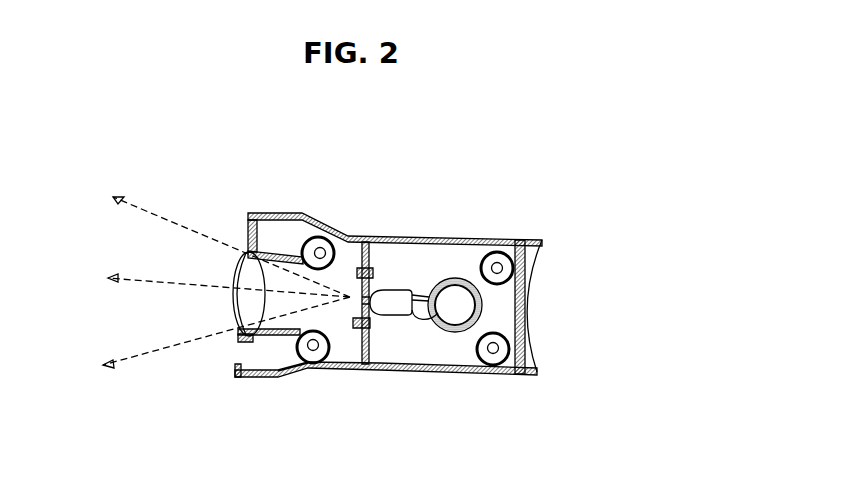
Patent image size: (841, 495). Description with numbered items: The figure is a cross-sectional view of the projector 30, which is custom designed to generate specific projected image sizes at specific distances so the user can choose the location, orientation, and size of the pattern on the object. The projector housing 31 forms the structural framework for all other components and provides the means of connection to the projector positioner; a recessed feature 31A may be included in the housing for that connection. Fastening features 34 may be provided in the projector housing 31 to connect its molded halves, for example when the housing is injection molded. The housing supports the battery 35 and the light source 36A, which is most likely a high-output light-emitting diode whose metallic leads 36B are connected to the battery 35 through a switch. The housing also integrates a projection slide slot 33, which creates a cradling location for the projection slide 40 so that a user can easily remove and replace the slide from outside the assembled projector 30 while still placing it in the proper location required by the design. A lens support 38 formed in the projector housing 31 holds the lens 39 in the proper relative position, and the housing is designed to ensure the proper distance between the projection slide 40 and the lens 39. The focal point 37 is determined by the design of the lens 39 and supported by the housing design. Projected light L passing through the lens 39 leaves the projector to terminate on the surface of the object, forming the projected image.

The projector 30 is at (546, 376).
The projector housing 31 is at (423, 373).
The recessed feature 31A is at (263, 353).
The projection slide slot 33 is at (344, 236).
The fastening features 34 is at (318, 253).
The battery 35 is at (453, 295).
The light source 36A is at (393, 303).
The metallic leads 36B is at (418, 297).
The focal point 37 is at (327, 367).
The lens support 38 is at (236, 220).
The lens 39 is at (228, 282).
The projection slide 40 is at (344, 340).
The projected light L is at (155, 217).